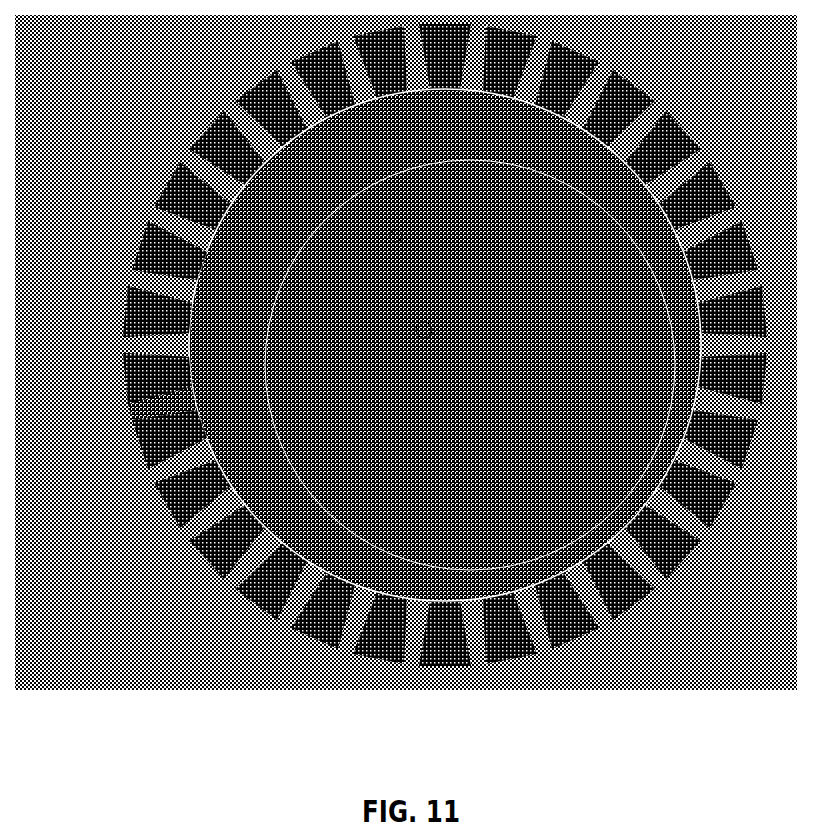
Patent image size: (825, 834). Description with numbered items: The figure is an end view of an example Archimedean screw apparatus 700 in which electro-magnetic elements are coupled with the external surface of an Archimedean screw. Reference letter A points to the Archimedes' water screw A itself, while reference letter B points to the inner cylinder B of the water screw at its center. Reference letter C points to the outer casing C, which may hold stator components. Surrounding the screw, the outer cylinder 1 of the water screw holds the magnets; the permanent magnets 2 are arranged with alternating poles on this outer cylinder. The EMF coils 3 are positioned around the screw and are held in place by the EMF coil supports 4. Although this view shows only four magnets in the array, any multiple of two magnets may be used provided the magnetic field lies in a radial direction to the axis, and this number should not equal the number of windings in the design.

The Archimedean screw apparatus 700 is at (208, 80).
The Archimedes' water screw A is at (390, 232).
The inner cylinder of the water screw B is at (417, 325).
The outer casing C is at (122, 252).
The outer cylinder of the water screw 1 is at (117, 333).
The permanent magnets 2 is at (220, 375).
The EMF coils 3 is at (122, 415).
The EMF coil supports 4 is at (127, 447).